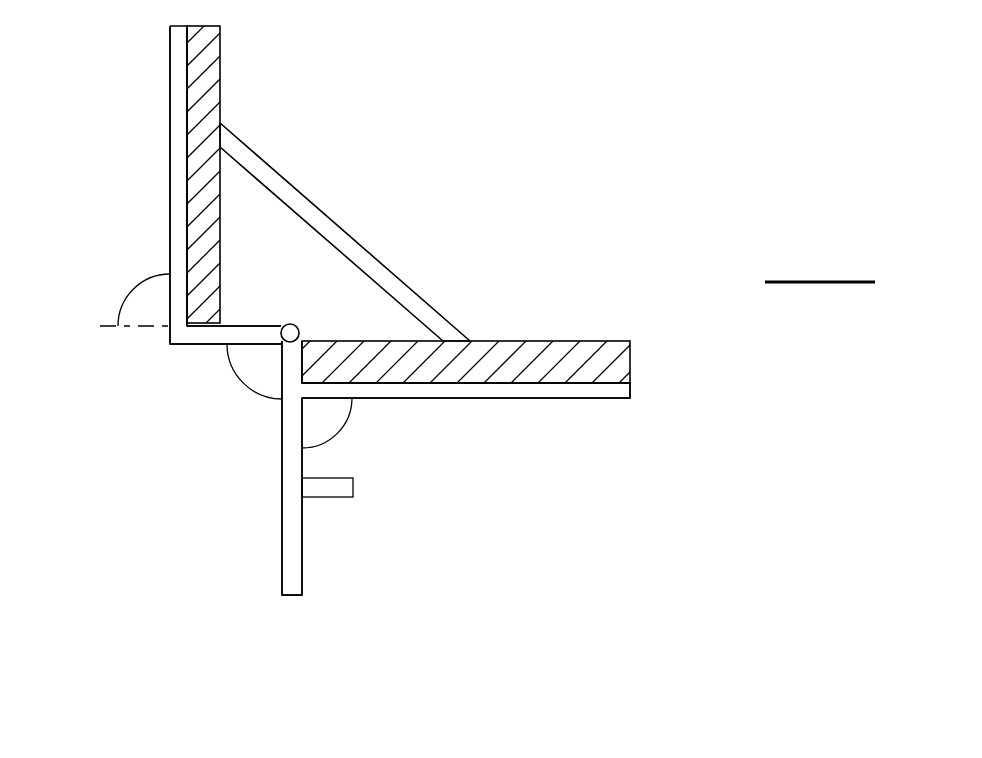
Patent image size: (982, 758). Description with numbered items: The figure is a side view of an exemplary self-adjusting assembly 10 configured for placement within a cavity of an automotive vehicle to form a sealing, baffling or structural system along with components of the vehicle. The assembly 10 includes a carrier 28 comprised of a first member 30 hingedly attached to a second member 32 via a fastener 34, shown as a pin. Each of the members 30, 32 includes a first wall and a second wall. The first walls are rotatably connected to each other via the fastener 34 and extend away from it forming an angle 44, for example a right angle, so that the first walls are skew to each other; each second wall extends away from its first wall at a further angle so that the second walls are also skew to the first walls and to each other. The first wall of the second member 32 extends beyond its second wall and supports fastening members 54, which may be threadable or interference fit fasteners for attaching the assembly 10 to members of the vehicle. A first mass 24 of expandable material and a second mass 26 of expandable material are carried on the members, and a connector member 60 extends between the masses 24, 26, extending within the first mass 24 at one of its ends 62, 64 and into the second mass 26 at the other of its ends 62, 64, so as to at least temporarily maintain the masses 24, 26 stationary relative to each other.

The assembly 10 is at (493, 80).
The first mass of expandable material 24 is at (208, 42).
The second mass of expandable material 26 is at (593, 341).
The carrier 28 is at (133, 479).
The first member 30 is at (160, 212).
The second member 32 is at (423, 468).
The fastener 34 is at (290, 324).
The angle 44 is at (243, 380).
The fastening member 54 is at (332, 512).
The connector member 60 is at (373, 217).
The end of connector member 62 is at (220, 124).
The end of connector member 64 is at (452, 332).